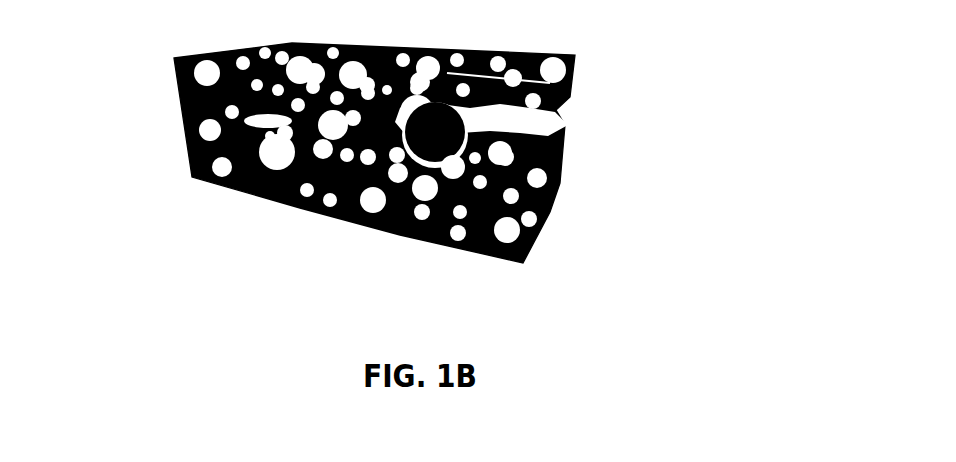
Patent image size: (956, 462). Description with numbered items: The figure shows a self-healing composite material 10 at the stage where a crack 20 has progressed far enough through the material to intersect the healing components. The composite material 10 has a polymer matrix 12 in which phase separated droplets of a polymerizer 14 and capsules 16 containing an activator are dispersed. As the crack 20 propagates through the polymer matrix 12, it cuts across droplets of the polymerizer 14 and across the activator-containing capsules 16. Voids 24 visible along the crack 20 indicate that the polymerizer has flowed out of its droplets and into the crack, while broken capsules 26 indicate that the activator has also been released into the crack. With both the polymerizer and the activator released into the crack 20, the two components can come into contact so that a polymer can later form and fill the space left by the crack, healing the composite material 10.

The composite material 10 is at (165, 116).
The polymer matrix 12 is at (480, 220).
The polymerizer 14 is at (217, 170).
The capsules 16 is at (270, 155).
The crack 20 is at (590, 118).
The voids 24 is at (508, 160).
The broken capsules 26 is at (433, 135).